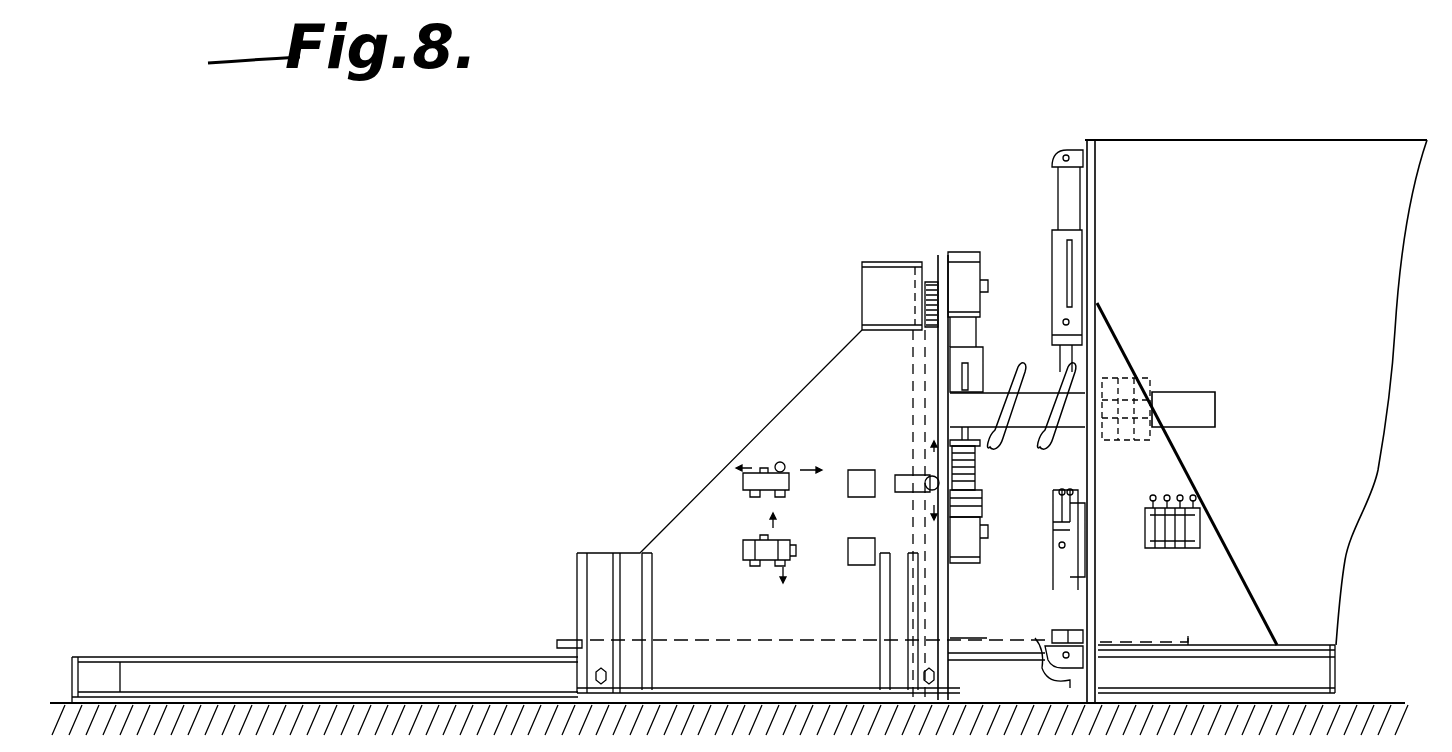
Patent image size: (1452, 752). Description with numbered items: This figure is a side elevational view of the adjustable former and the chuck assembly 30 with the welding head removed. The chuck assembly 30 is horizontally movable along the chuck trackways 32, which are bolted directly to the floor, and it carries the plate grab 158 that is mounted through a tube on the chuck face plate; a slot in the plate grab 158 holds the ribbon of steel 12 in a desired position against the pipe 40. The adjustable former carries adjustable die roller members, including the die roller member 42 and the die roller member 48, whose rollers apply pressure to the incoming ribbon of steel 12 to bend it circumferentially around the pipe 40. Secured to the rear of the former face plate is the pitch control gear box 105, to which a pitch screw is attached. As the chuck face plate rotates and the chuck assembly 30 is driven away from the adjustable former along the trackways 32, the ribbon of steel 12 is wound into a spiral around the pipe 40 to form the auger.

The ribbon of steel 12 is at (1048, 452).
The chuck assembly 30 is at (769, 414).
The chuck trackways 32 is at (448, 622).
The pipe 40 is at (1215, 415).
The adjustable die roller member 42 is at (1050, 238).
The adjustable die roller member 48 is at (1071, 624).
The pitch control gear box 105 is at (1200, 520).
The plate grab 158 is at (956, 247).